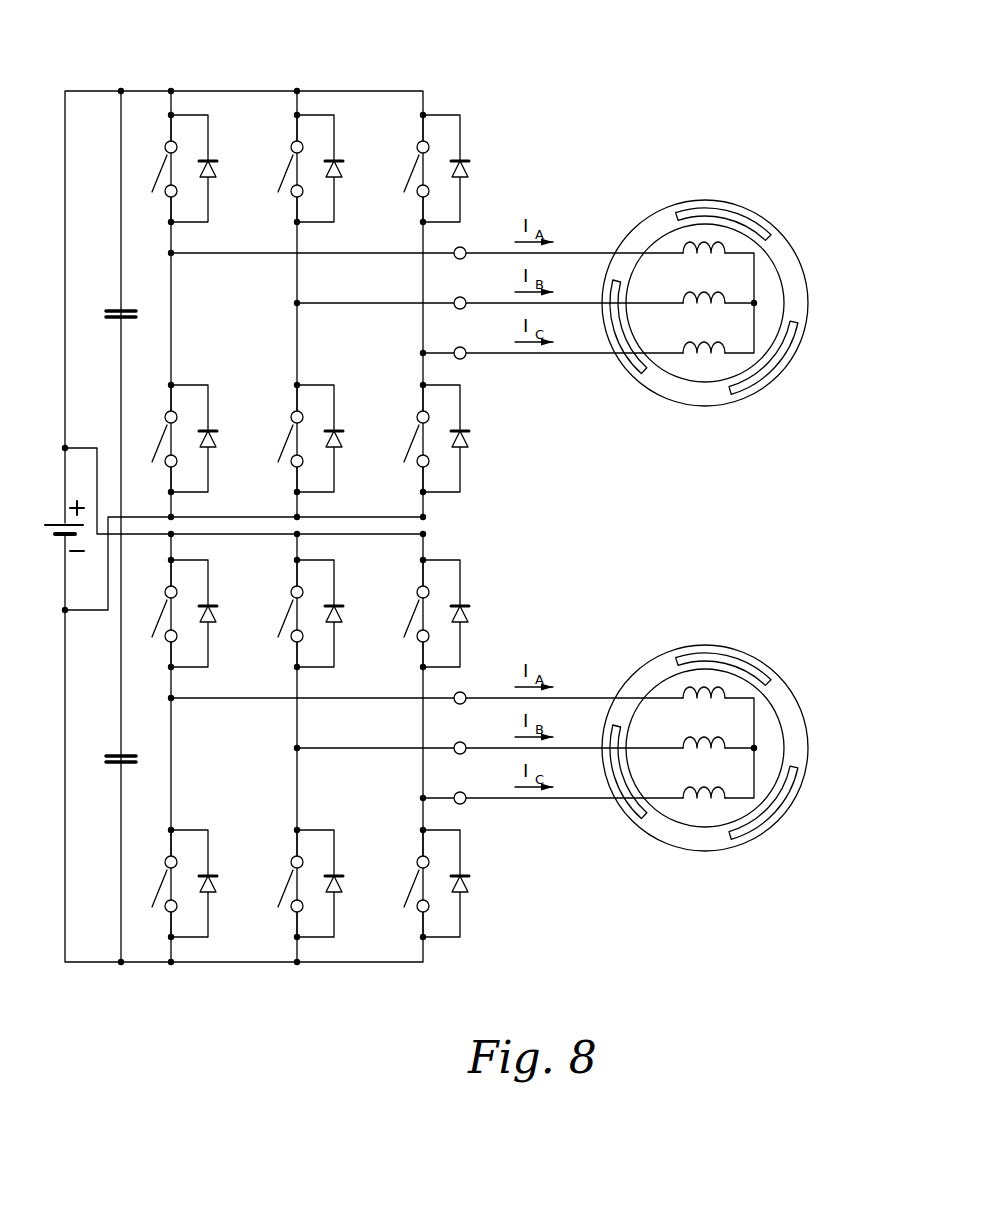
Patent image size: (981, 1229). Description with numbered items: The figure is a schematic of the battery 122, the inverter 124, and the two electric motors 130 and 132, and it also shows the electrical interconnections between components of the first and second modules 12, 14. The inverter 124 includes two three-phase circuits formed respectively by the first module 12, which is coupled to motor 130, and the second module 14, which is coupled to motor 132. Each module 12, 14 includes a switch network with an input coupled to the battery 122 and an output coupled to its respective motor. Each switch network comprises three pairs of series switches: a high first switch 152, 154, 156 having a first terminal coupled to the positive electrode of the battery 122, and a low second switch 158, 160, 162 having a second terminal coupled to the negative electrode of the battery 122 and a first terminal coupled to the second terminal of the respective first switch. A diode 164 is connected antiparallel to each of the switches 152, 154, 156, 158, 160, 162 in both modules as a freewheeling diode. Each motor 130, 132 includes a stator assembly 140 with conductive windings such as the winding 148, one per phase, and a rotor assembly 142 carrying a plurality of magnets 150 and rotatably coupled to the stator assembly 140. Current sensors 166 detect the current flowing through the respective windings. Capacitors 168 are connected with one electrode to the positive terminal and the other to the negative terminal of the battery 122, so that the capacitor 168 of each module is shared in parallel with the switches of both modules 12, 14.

The first module 12 is at (290, 72).
The second module 14 is at (288, 968).
The battery 122 is at (57, 537).
The inverter 124 is at (465, 82).
The electric motor 130 is at (750, 190).
The electric motor 132 is at (750, 635).
The stator assembly 140 is at (643, 219).
The rotor assembly 142 is at (686, 406).
The winding 148 is at (703, 357).
The magnets 150 is at (696, 535).
The first switch 152 is at (160, 170).
The first switch 154 is at (286, 170).
The first switch 156 is at (412, 170).
The second switch 158 is at (160, 440).
The second switch 160 is at (286, 440).
The second switch 162 is at (412, 440).
The diode 164 is at (338, 527).
The current sensor 166 is at (484, 541).
The capacitor 168 is at (108, 310).